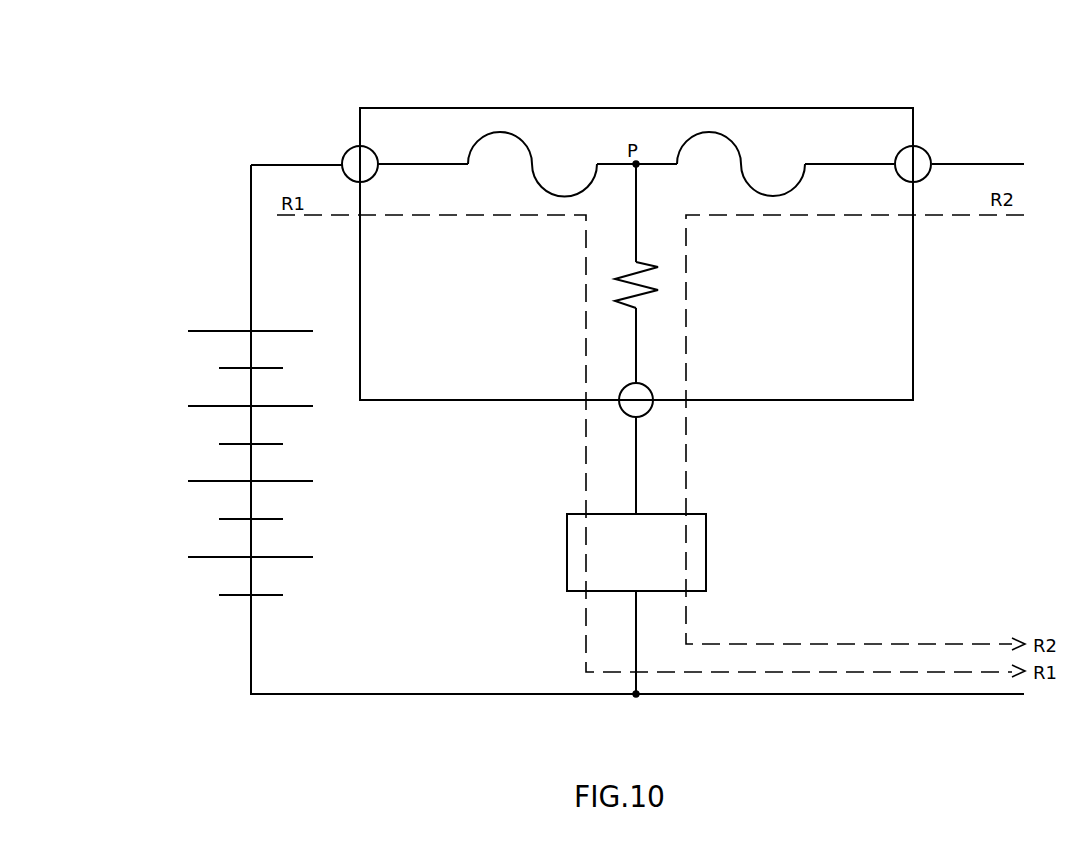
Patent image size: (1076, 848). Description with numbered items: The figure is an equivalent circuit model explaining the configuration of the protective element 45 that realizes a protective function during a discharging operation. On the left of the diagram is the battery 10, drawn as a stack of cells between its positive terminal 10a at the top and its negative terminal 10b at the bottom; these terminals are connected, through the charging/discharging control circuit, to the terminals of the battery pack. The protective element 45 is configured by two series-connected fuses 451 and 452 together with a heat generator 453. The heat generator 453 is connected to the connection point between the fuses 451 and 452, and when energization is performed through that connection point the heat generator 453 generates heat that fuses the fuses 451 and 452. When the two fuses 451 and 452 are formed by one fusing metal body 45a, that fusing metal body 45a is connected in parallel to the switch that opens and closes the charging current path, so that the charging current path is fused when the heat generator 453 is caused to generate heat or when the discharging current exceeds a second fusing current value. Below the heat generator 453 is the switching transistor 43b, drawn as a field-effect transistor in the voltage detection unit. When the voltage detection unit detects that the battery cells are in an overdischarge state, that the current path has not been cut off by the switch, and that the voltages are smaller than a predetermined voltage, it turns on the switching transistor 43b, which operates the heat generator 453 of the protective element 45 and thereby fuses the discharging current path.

The battery 10 is at (217, 467).
The positive terminal 10a is at (248, 331).
The negative terminal 10b is at (202, 612).
The protective element 45 is at (790, 108).
The fusing metal body 45a is at (636, 114).
The fuse 451 is at (503, 133).
The fuse 452 is at (734, 135).
The heat generator 453 is at (615, 290).
The switching transistor 43b is at (706, 550).